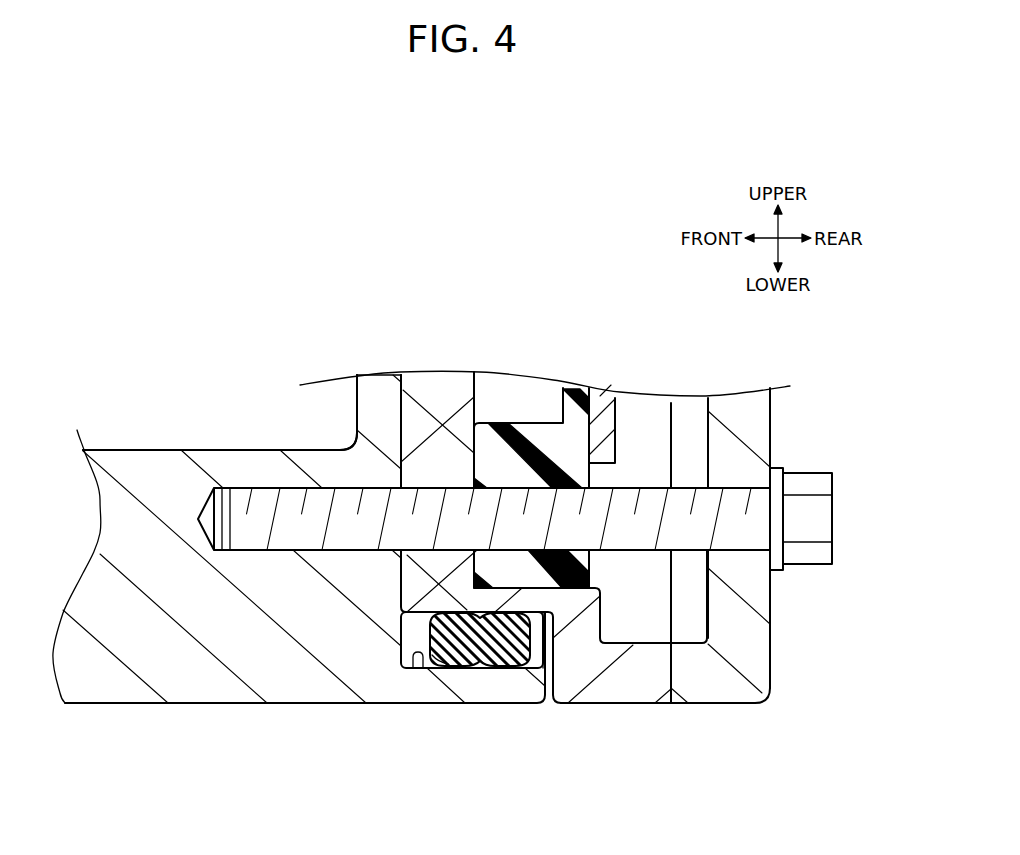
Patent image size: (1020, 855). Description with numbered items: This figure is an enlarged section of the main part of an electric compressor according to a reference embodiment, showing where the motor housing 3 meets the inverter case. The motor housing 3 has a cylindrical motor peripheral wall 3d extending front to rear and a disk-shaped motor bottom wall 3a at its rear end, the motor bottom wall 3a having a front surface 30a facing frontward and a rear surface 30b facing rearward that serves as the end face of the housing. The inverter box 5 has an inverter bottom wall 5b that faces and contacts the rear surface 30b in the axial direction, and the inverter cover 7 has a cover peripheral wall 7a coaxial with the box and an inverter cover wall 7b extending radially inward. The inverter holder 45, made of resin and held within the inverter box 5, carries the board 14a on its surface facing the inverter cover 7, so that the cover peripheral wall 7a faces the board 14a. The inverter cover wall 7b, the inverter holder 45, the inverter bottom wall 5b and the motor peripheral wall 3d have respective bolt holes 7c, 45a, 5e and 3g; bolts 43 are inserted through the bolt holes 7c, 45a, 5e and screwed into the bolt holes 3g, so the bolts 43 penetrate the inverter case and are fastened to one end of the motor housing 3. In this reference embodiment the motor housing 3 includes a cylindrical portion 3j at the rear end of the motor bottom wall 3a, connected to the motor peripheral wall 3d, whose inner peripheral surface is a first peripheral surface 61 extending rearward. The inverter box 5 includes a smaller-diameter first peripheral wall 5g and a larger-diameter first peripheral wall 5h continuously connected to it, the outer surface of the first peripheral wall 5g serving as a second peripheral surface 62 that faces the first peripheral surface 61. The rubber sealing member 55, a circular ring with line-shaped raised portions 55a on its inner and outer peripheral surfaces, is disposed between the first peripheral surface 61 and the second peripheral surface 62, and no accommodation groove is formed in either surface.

The motor housing 3 is at (137, 690).
The motor bottom wall 3a is at (365, 388).
The motor peripheral wall 3d is at (118, 460).
The bolt holes 3g is at (213, 480).
The cylindrical portion 3j is at (425, 668).
The front surface 30a is at (345, 413).
The rear surface 30b is at (410, 378).
The inverter box 5 is at (590, 694).
The inverter bottom wall 5b is at (468, 370).
The bolt holes 5e is at (437, 486).
The first peripheral wall 5g is at (527, 670).
The first peripheral wall 5h is at (635, 692).
The inverter cover 7 is at (783, 423).
The cover peripheral wall 7a is at (699, 695).
The inverter cover wall 7b is at (749, 645).
The bolt holes 7c is at (717, 497).
The board 14a is at (613, 403).
The bolts 43 is at (811, 556).
The inverter holder 45 is at (543, 433).
The bolt holes 45a is at (593, 553).
The sealing member 55 is at (312, 478).
The raised portions 55a is at (530, 660).
The first peripheral surface 61 is at (420, 656).
The second peripheral surface 62 is at (425, 628).